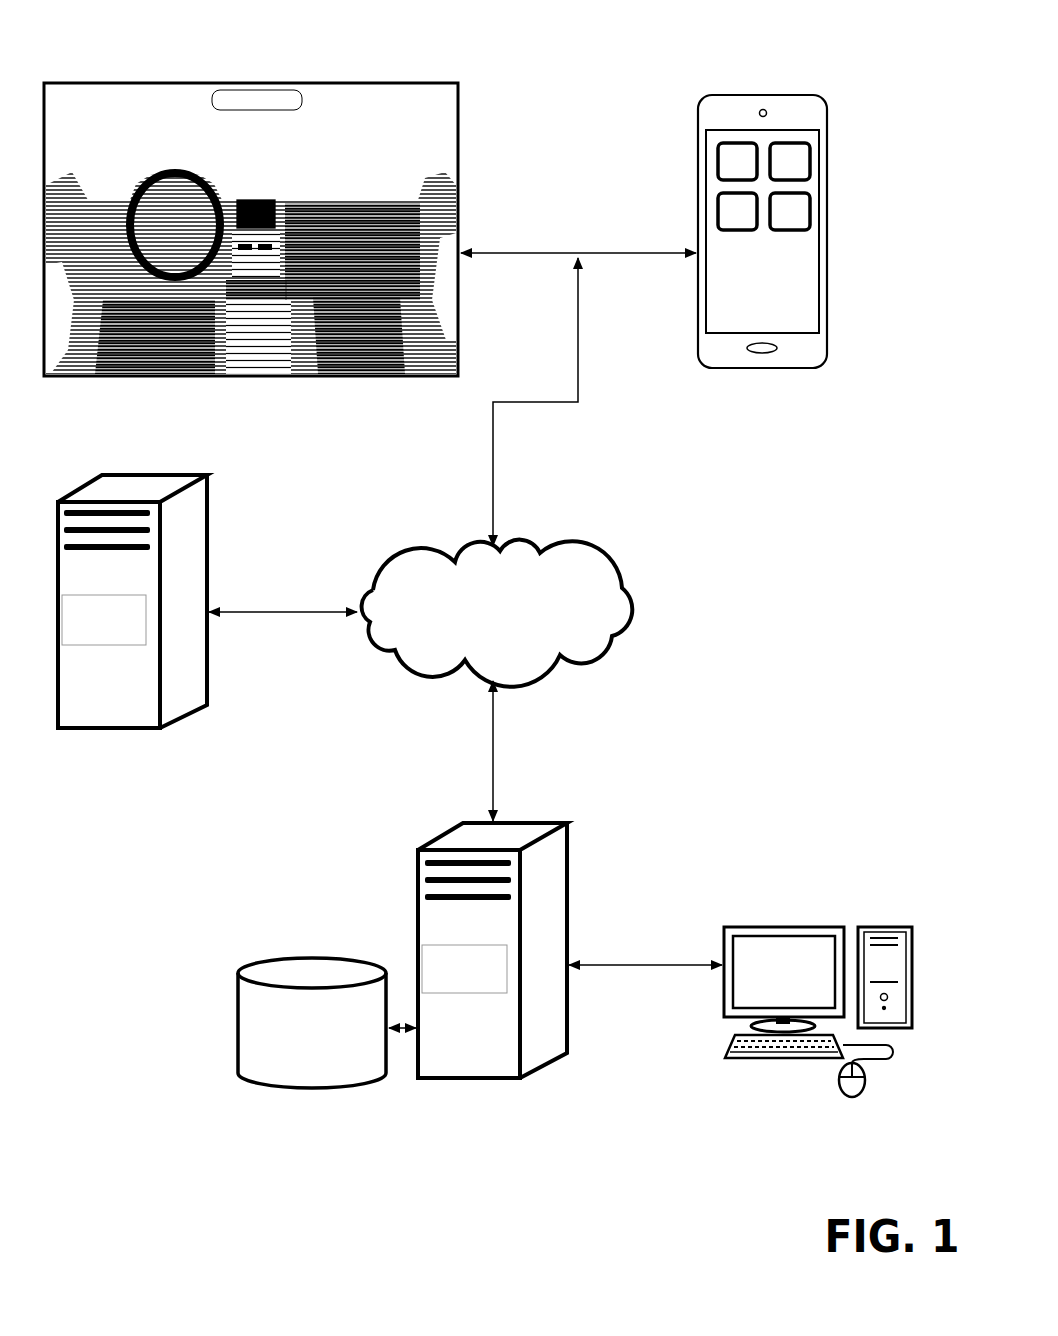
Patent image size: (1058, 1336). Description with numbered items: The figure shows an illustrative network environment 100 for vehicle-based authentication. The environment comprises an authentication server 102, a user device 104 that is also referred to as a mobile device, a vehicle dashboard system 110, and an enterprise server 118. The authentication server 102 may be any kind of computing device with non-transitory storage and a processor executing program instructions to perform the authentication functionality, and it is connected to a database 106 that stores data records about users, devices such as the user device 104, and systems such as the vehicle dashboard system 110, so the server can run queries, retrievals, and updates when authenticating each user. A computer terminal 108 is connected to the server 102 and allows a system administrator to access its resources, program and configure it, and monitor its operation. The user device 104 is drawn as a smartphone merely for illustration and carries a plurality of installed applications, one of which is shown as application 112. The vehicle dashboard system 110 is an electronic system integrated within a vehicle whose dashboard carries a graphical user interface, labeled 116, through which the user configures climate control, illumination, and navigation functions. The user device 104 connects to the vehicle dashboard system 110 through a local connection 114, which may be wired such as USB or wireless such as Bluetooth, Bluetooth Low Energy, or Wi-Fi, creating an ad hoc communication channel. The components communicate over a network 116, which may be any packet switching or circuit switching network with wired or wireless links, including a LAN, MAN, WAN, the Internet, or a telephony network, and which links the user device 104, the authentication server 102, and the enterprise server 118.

The network environment 100 is at (866, 1193).
The authentication server 102 is at (444, 988).
The user device 104 is at (806, 261).
The database 106 is at (291, 1046).
The computer terminal 108 is at (776, 1118).
The vehicle dashboard system 110 is at (217, 426).
The application 112 is at (786, 157).
The local connection 114 is at (531, 251).
The network 116 is at (462, 621).
The enterprise server 118 is at (83, 638).